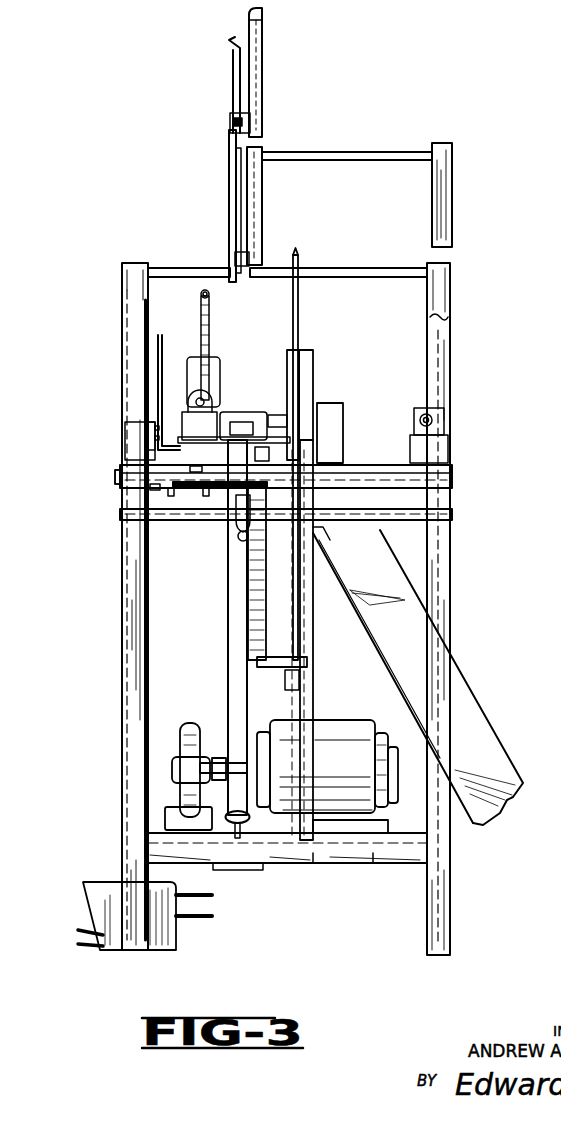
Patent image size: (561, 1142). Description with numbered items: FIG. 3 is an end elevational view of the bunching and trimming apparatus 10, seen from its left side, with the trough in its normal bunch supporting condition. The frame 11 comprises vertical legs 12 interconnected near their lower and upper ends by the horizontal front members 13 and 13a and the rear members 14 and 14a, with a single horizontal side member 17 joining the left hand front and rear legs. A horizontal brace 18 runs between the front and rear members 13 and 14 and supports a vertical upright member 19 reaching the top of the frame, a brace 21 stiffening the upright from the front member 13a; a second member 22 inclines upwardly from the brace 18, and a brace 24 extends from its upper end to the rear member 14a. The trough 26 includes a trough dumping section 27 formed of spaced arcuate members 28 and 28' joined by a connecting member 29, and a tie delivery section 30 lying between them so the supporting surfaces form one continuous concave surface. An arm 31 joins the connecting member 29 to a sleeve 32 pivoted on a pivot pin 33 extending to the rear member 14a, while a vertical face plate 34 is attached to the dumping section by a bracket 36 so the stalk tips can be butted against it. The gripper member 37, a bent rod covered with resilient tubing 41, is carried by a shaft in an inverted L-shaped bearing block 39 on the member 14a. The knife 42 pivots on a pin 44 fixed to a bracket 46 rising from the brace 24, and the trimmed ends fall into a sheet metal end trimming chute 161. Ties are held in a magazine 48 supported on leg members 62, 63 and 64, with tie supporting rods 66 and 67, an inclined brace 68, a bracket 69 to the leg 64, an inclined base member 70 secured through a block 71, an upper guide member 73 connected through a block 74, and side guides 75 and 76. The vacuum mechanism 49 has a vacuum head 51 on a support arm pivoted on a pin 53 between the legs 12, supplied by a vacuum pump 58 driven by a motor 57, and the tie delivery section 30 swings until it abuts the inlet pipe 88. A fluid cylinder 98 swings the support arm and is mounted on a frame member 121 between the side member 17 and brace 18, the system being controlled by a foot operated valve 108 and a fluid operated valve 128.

The bunching and trimming apparatus 10 is at (102, 650).
The frame 11 is at (122, 592).
The vertical legs 12 is at (122, 770).
The horizontal front member 13 is at (445, 853).
The horizontal front member 13a is at (450, 480).
The rear member 14 is at (122, 852).
The rear member 14a is at (125, 468).
The horizontal side member 17 is at (313, 853).
The horizontal brace 18 is at (373, 853).
The vertical upright member 19 is at (297, 703).
The brace 21 is at (405, 478).
The second member 22 is at (303, 756).
The brace 24 is at (170, 472).
The trough 26 is at (243, 414).
The trough dumping section 27 is at (193, 418).
The arcuate member 28 is at (150, 403).
The arcuate member 28' is at (279, 414).
The connecting member 29 is at (253, 414).
The tie delivery section 30 is at (226, 414).
The arm 31 is at (195, 478).
The sleeve 32 is at (205, 472).
The pivot pin 33 is at (157, 487).
The vertical face plate 34 is at (157, 350).
The bracket 36 is at (148, 418).
The gripper member 37 is at (210, 300).
The inverted L-shaped bearing block 39 is at (127, 430).
The resilient tubing 41 is at (200, 330).
The knife 42 is at (300, 300).
The pin 44 is at (343, 405).
The bracket 46 is at (313, 410).
The magazine 48 is at (265, 55).
The vacuum mechanism 49 is at (263, 455).
The vacuum head 51 is at (226, 472).
The pin 53 is at (407, 520).
The motor 57 is at (358, 720).
The vacuum pump 58 is at (188, 726).
The leg member 62 is at (455, 200).
The leg member 63 is at (452, 290).
The leg member 64 is at (125, 302).
The tie supporting rod 66 is at (345, 152).
The tie supporting rod 67 is at (350, 268).
The inclined brace 68 is at (229, 205).
The bracket 69 is at (185, 268).
The inclined base member 70 is at (262, 192).
The block 71 is at (247, 256).
The upper guide member 73 is at (248, 22).
The block 74 is at (230, 128).
The side guide 75 is at (230, 47).
The side guide 76 is at (236, 170).
The inlet pipe 88 is at (240, 540).
The fluid cylinder 98 is at (229, 641).
The foot operated valve 108 is at (85, 918).
The frame member 121 is at (246, 872).
The fluid operated valve 128 is at (430, 410).
The sheet metal end trimming chute 161 is at (477, 700).